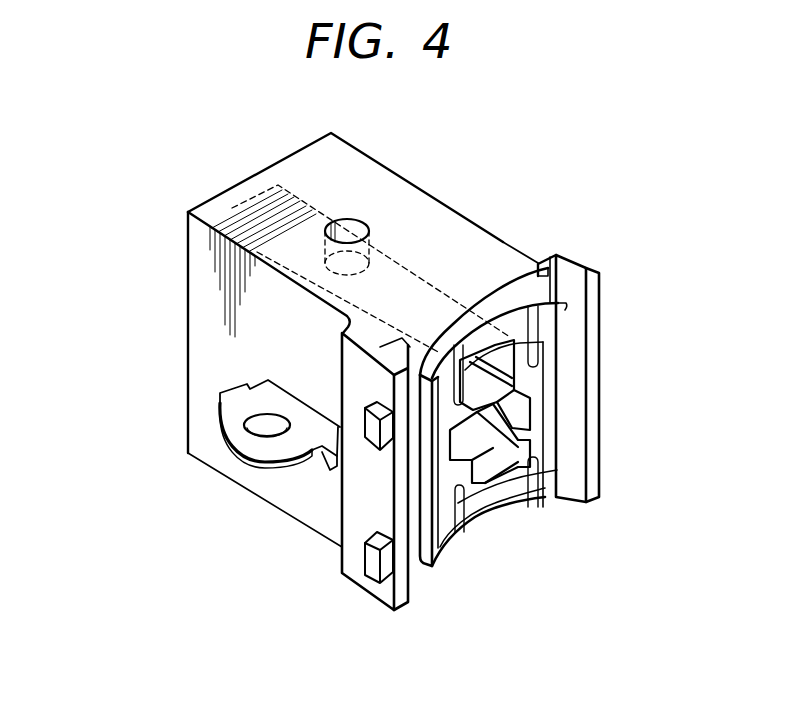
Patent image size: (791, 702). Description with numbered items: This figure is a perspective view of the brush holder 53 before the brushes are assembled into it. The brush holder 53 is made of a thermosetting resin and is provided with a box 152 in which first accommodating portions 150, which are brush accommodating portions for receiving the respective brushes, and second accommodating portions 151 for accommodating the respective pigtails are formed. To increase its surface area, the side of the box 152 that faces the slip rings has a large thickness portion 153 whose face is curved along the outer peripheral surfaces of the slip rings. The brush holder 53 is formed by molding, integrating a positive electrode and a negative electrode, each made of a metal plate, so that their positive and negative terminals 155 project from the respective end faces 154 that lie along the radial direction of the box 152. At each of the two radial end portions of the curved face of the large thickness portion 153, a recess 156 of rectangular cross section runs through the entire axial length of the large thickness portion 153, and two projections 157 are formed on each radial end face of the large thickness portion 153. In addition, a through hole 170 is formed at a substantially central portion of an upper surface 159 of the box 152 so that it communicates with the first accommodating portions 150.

The brush holder 53 is at (435, 157).
The first accommodating portions 150 is at (512, 362).
The second accommodating portions 151 is at (528, 405).
The box 152 is at (287, 177).
The large thickness portion 153 is at (505, 243).
The end faces 154 is at (203, 325).
The terminals 155 is at (248, 447).
The recess 156 is at (410, 588).
The projections 157 is at (368, 557).
The upper surface 159 is at (355, 178).
The through hole 170 is at (364, 216).